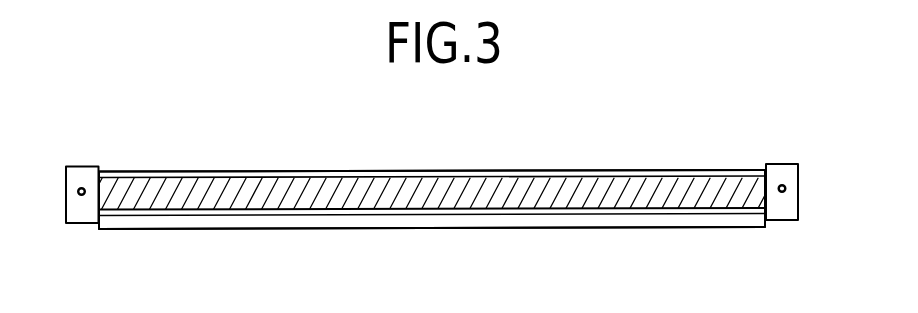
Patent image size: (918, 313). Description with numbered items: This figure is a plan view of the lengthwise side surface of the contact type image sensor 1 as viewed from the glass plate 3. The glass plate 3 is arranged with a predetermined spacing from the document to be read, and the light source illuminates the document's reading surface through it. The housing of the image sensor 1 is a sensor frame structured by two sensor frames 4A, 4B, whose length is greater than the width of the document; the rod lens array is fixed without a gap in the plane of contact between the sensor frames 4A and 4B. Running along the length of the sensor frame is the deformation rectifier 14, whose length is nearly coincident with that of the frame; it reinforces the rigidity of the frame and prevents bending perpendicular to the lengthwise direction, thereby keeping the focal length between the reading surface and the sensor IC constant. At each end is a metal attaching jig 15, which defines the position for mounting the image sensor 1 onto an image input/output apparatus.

The image sensor 1 is at (437, 198).
The glass plate 3 is at (712, 195).
The sensor frame 4A is at (510, 172).
The sensor frame 4B is at (457, 210).
The deformation rectifier 14 is at (622, 222).
The attaching jig 15 is at (85, 170).